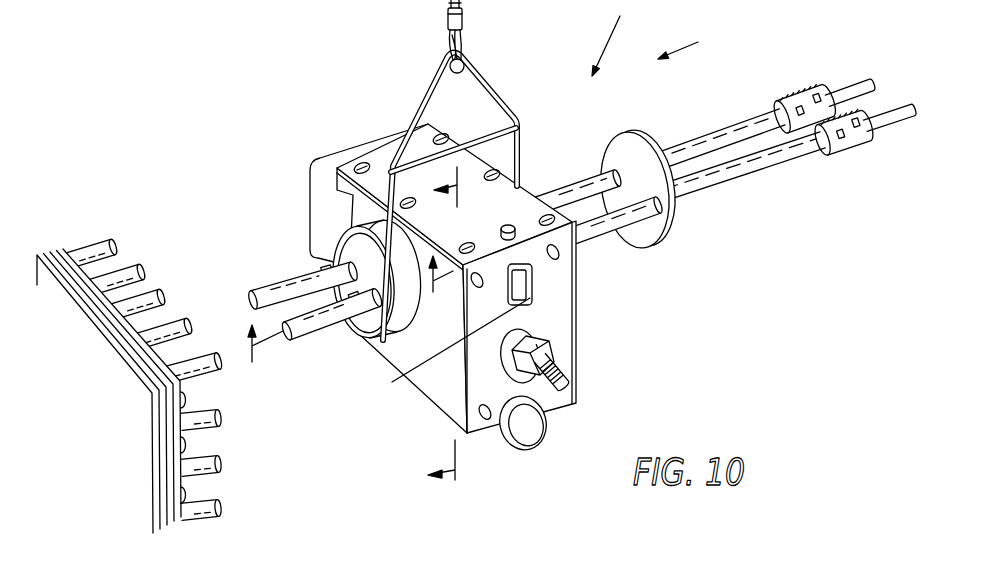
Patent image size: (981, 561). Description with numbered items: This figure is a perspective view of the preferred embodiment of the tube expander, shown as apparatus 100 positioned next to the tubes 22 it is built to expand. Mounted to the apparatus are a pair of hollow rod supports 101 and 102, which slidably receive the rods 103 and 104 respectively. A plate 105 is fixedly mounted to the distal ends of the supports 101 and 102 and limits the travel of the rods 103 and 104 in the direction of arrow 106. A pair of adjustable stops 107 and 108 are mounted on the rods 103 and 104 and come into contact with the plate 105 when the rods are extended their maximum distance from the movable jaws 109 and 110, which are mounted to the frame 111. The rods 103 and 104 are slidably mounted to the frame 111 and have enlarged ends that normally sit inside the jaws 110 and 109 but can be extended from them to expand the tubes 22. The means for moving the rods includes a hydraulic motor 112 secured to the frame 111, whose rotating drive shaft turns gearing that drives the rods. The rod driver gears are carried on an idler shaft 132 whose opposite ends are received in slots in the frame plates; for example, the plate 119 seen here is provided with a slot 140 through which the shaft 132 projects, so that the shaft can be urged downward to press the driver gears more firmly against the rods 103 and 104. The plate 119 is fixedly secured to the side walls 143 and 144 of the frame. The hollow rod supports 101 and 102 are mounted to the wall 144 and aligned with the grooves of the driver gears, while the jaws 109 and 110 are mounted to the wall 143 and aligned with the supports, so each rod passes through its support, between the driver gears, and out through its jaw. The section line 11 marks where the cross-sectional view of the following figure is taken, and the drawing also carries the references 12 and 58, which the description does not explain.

The section line 11 is at (454, 323).
The section line 12- 12 is at (345, 313).
The tubes 22 is at (184, 322).
The fin plate stack 58 is at (197, 409).
The apparatus 100 is at (614, 38).
The rod support 101 is at (567, 181).
The rod support 102 is at (597, 232).
The rod 103 is at (767, 122).
The rod 104 is at (777, 158).
The plate 105 is at (662, 223).
The arrow 106 is at (692, 40).
The adjustable stop 107 is at (800, 94).
The adjustable stop 108 is at (850, 144).
The movable jaw 109 is at (281, 271).
The movable jaw 110 is at (325, 326).
The frame 111 is at (563, 350).
The hydraulic motor 112 is at (545, 432).
The plate 119 is at (568, 357).
The idler shaft 132 is at (532, 298).
The slot 140 is at (445, 348).
The side wall 143 is at (427, 382).
The side wall 144 is at (574, 272).